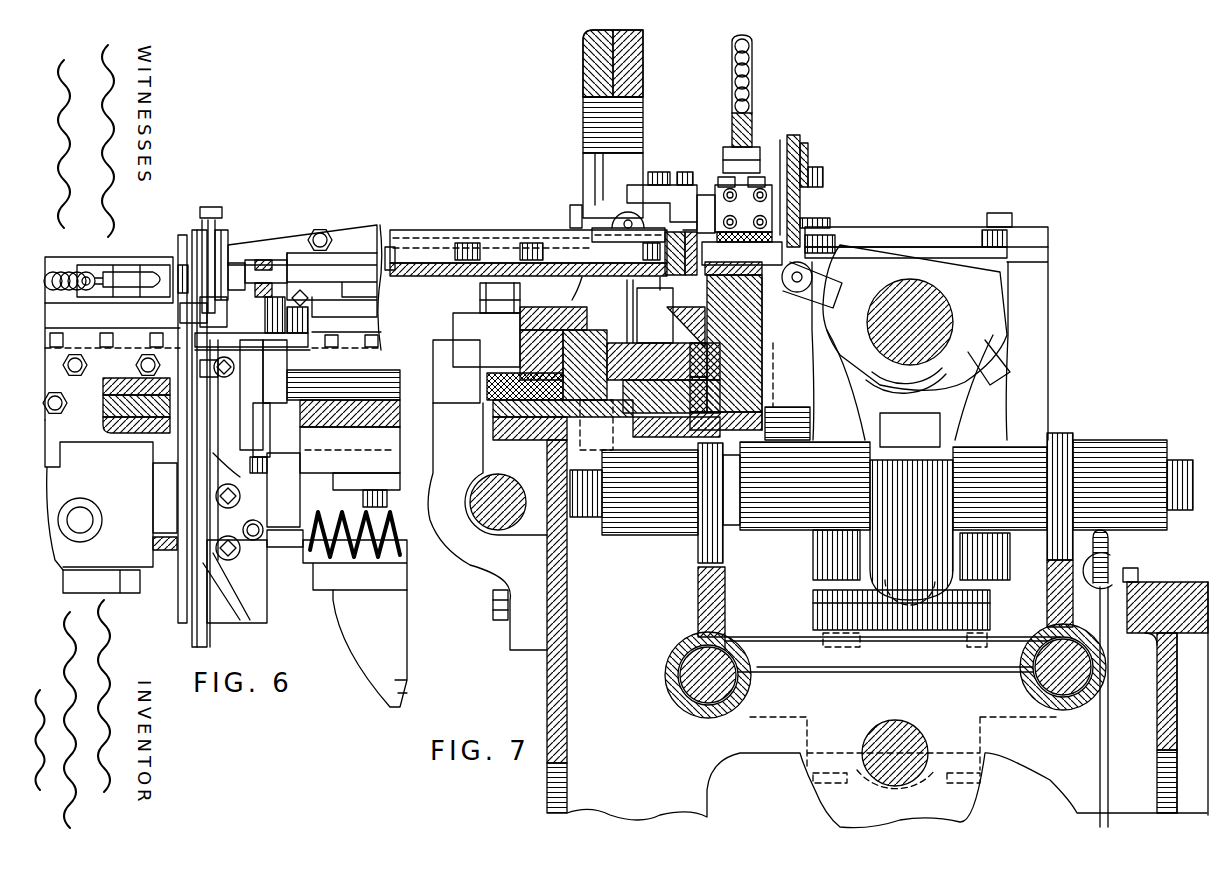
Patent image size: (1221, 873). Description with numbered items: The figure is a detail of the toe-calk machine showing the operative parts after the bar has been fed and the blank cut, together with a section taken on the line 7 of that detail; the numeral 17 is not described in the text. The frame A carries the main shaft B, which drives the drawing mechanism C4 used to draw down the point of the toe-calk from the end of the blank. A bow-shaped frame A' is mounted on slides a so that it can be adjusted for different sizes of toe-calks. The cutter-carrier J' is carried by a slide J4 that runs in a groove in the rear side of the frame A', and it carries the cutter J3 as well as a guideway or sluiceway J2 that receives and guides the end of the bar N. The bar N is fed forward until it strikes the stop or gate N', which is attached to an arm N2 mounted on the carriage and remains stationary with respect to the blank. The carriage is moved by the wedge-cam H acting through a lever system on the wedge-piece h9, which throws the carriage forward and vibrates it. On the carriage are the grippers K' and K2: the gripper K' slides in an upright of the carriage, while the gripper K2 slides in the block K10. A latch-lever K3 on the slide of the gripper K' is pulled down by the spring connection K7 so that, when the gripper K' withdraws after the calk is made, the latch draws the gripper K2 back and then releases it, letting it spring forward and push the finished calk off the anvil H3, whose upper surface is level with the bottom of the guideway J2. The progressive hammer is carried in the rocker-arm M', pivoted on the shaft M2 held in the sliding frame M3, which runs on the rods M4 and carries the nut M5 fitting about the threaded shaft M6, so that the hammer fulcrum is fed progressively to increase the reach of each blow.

In FIG. 6, the section line 7 is at (213, 207).
In FIG. 6, the figure note 17 is at (262, 641).
In FIG. 6, the gripper K2 is at (202, 268).
In FIG. 7, the gripper K2 is at (743, 213).
In FIG. 6, the movable gripper K' is at (300, 216).
In FIG. 7, the latch-lever K3 is at (790, 140).
In FIG. 7, the spring connection K7 is at (790, 96).
In FIG. 7, the block K10 is at (723, 185).
In FIG. 6, the bar N is at (176, 443).
In FIG. 7, the bar N is at (398, 215).
In FIG. 6, the stop or gate N' is at (230, 414).
In FIG. 7, the stop or gate N' is at (823, 228).
In FIG. 6, the arm N2 is at (285, 228).
In FIG. 7, the arm N2 is at (800, 153).
In FIG. 6, the cutter-carrier J' is at (326, 433).
In FIG. 6, the guideway or sluiceway J2 is at (183, 598).
In FIG. 7, the guideway or sluiceway J2 is at (541, 242).
In FIG. 6, the cutter J3 is at (263, 340).
In FIG. 7, the cutter J3 is at (668, 290).
In FIG. 6, the slide J4 is at (203, 330).
In FIG. 7, the slide J4 is at (715, 190).
In FIG. 7, the frame A is at (817, 555).
In FIG. 6, the bow-shaped frame A' is at (136, 395).
In FIG. 7, the bow-shaped frame A' is at (597, 124).
In FIG. 6, the slides a is at (83, 583).
In FIG. 7, the main shaft B is at (950, 323).
In FIG. 7, the drawing mechanism C4 is at (896, 317).
In FIG. 7, the wedge-cam H is at (765, 327).
In FIG. 7, the anvil H3 is at (763, 311).
In FIG. 7, the wedge-piece h9 is at (607, 312).
In FIG. 7, the plate P is at (752, 263).
In FIG. 7, the rocker-arm M' is at (887, 495).
In FIG. 7, the shaft M2 is at (881, 498).
In FIG. 7, the sliding frame M3 is at (725, 585).
In FIG. 7, the rods M4 is at (1023, 678).
In FIG. 7, the nut M5 is at (905, 753).
In FIG. 7, the threaded shaft M6 is at (895, 740).